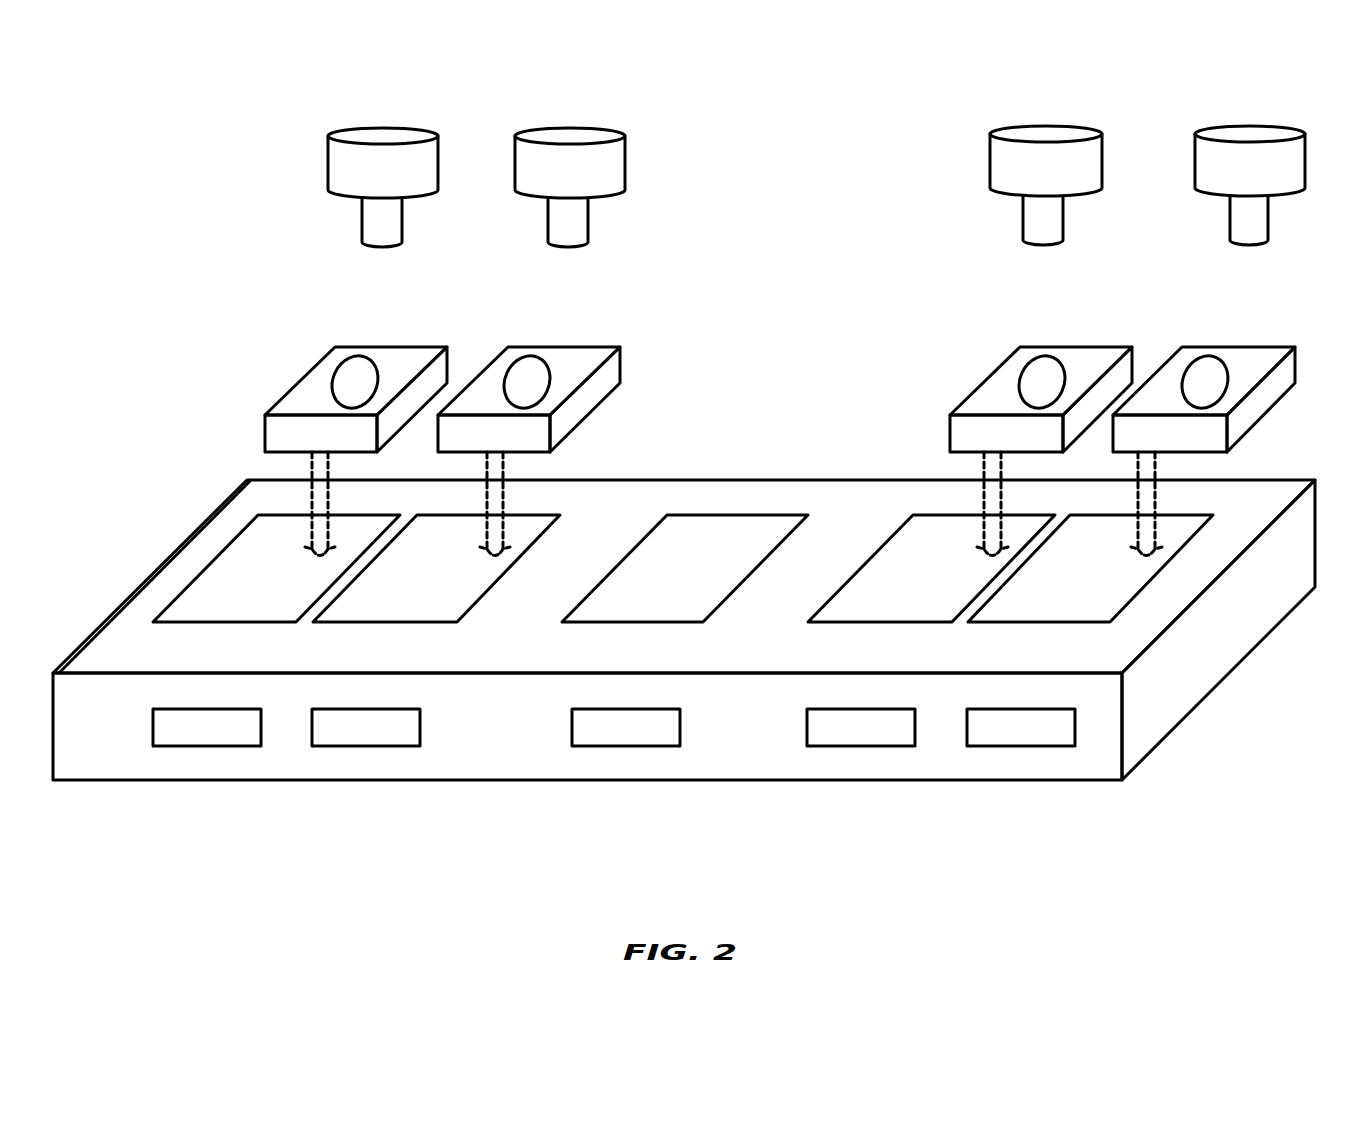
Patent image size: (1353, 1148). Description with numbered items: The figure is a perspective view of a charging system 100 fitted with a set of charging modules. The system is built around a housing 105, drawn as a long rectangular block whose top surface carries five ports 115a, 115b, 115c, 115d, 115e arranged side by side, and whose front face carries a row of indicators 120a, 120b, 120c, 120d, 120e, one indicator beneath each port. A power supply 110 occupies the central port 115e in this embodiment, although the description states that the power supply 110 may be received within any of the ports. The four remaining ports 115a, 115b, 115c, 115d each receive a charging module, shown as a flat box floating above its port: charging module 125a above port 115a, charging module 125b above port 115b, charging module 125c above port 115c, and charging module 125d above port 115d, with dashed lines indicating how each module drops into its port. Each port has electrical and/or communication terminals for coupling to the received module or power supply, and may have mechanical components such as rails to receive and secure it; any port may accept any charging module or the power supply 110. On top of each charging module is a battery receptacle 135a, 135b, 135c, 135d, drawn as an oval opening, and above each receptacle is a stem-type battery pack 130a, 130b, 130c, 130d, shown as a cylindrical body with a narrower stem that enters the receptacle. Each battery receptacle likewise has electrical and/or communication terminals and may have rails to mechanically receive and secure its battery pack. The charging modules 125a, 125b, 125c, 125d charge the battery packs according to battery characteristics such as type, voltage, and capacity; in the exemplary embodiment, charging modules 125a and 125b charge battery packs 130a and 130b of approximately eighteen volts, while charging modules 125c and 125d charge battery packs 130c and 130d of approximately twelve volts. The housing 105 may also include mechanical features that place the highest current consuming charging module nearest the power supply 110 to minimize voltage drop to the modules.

The charging system 100 is at (210, 324).
The housing 105 is at (615, 782).
The power supply 110 is at (685, 568).
The port 115a is at (276, 568).
The port 115b is at (436, 568).
The port 115c is at (931, 568).
The port 115d is at (1090, 568).
The port 115e is at (766, 504).
The indicator 120a is at (207, 727).
The indicator 120b is at (366, 727).
The indicator 120c is at (861, 727).
The indicator 120d is at (1021, 727).
The indicator 120e is at (626, 727).
The charging module 125a is at (367, 347).
The charging module 125b is at (570, 343).
The charging module 125c is at (1037, 347).
The charging module 125d is at (1233, 347).
The battery pack 130a is at (440, 147).
The battery pack 130b is at (623, 147).
The battery pack 130c is at (1042, 127).
The battery pack 130d is at (1247, 127).
The battery receptacle 135a is at (350, 367).
The battery receptacle 135b is at (543, 363).
The battery receptacle 135c is at (1023, 367).
The battery receptacle 135d is at (1222, 360).